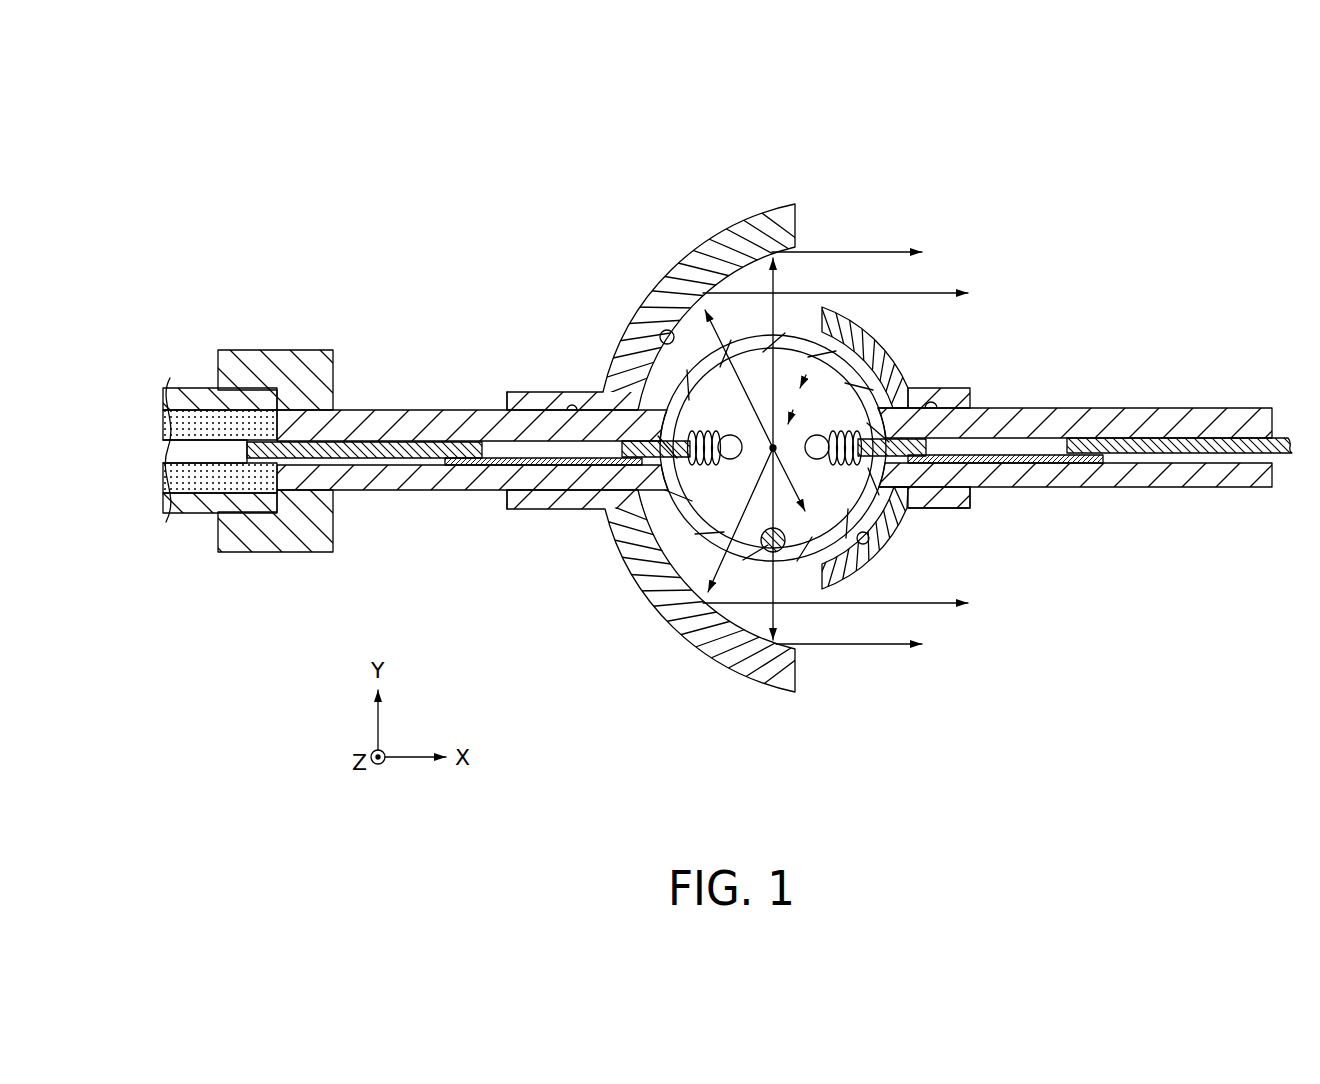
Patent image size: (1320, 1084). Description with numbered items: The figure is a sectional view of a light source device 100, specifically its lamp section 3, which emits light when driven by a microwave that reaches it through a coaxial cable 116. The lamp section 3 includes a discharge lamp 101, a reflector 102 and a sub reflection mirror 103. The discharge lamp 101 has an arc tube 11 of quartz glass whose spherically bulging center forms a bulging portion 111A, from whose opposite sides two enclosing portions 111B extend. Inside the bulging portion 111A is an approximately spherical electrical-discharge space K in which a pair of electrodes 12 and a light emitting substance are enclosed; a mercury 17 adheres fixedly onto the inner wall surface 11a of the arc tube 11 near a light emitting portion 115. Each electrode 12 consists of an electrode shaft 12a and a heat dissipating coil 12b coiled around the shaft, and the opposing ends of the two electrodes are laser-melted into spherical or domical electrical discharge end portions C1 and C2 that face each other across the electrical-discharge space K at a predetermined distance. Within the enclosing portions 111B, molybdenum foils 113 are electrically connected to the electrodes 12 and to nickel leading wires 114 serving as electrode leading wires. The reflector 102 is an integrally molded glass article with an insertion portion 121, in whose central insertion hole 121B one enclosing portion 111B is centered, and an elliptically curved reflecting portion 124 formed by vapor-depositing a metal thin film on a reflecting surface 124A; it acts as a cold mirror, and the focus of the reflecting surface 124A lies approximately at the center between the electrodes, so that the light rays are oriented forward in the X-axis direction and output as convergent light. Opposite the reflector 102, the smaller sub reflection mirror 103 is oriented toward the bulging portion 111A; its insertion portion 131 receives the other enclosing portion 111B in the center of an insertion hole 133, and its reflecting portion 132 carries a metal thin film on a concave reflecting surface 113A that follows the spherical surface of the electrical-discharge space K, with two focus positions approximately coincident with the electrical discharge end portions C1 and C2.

The light source device 100 is at (1126, 177).
The lamp section 3 is at (1013, 240).
The discharge lamp 101 is at (1192, 388).
The reflector 102 is at (712, 224).
The sub reflection mirror 103 is at (925, 519).
The arc tube 11 is at (1100, 492).
The inner wall surface 11a is at (728, 535).
The electrodes 12 is at (628, 504).
The electrode shaft 12a is at (923, 445).
The heat dissipating coil 12b is at (895, 426).
The mercury 17 is at (787, 550).
The bulging portion 111A is at (695, 565).
The enclosing portions 111B is at (774, 542).
The foils 113 is at (502, 458).
The arc portion 113A is at (868, 543).
The leading wires 114 is at (453, 450).
The light emitting portion 115 is at (773, 448).
The coaxial cable 116 is at (198, 514).
The insertion portion 121 is at (540, 391).
The insertion hole 121B is at (580, 391).
The reflecting portion 124 is at (766, 222).
The reflecting surface 124A is at (660, 330).
The insertion portion 131 is at (967, 500).
The reflecting portion 132 is at (848, 578).
The insertion hole 133 is at (928, 404).
The electrical discharge end portion C1 is at (733, 460).
The electrical discharge end portion C2 is at (818, 460).
The electrical-discharge space K is at (708, 497).